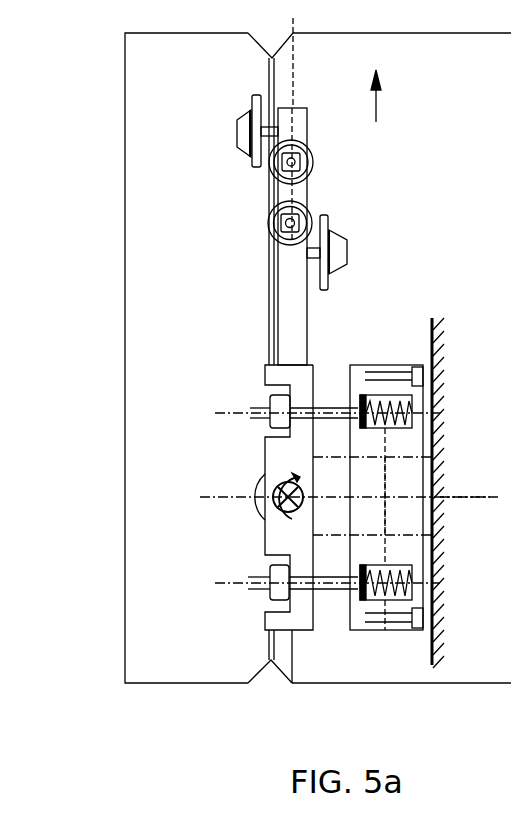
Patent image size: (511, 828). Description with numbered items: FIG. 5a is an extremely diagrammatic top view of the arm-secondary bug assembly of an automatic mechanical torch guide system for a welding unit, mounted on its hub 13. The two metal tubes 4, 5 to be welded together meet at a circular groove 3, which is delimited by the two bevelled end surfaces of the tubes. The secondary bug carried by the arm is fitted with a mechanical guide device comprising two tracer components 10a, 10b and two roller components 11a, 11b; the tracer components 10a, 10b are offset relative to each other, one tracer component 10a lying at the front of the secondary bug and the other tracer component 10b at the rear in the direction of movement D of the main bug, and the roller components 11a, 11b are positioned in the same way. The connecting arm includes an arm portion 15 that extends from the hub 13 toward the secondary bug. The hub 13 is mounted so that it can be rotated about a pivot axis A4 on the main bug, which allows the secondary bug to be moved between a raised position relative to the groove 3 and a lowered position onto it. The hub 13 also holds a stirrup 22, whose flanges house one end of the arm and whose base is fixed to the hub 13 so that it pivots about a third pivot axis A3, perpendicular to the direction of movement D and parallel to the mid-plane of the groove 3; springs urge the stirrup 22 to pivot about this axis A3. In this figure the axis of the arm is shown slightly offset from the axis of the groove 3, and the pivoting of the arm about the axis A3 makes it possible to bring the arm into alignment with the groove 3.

The circular groove 3 is at (270, 672).
The metal tube 4 is at (142, 312).
The metal tube 5 is at (465, 673).
The tracer component 10a is at (256, 100).
The tracer component 10b is at (328, 219).
The roller component 11a is at (237, 133).
The roller component 11b is at (347, 255).
The hub 13 is at (410, 472).
The arm portion 15 is at (297, 313).
The stirrup 22 is at (300, 372).
The third pivot axis A3 is at (272, 506).
The pivot axis A4 is at (475, 497).
The direction of movement D is at (386, 96).